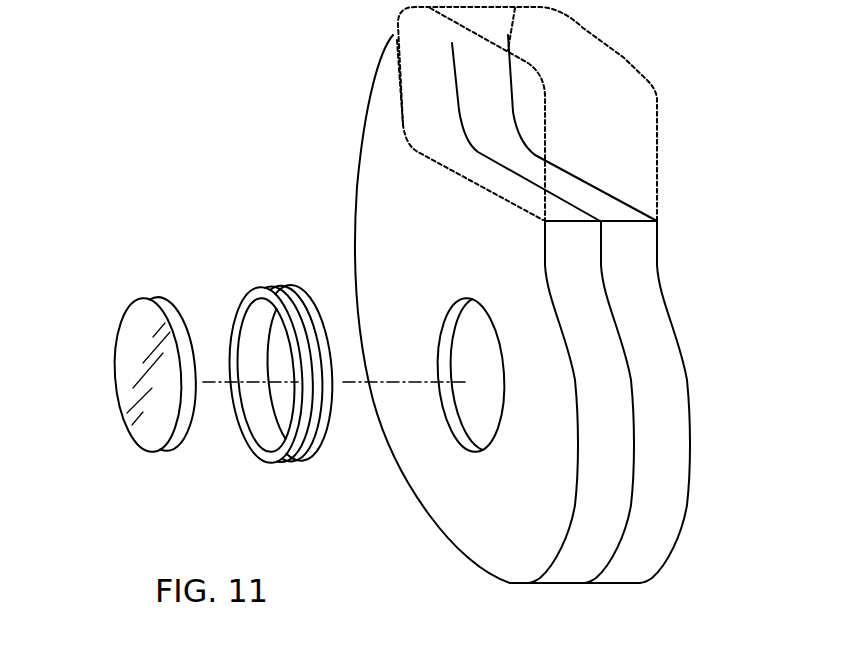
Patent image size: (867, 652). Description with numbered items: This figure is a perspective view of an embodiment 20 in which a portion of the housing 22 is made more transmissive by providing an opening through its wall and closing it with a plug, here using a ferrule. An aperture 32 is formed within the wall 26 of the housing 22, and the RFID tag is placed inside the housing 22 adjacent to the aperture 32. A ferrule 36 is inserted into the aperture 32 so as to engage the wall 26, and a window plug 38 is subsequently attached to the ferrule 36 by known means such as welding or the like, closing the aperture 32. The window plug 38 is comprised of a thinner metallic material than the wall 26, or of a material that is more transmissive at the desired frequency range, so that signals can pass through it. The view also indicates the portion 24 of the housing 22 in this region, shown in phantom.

The assembly 20 is at (288, 193).
The housing 22 is at (551, 309).
The removed cap portion 24 is at (550, 113).
The wall 26 is at (441, 371).
The aperture 32 is at (419, 426).
The ferrule 36 is at (260, 359).
The window plug 38 is at (122, 374).